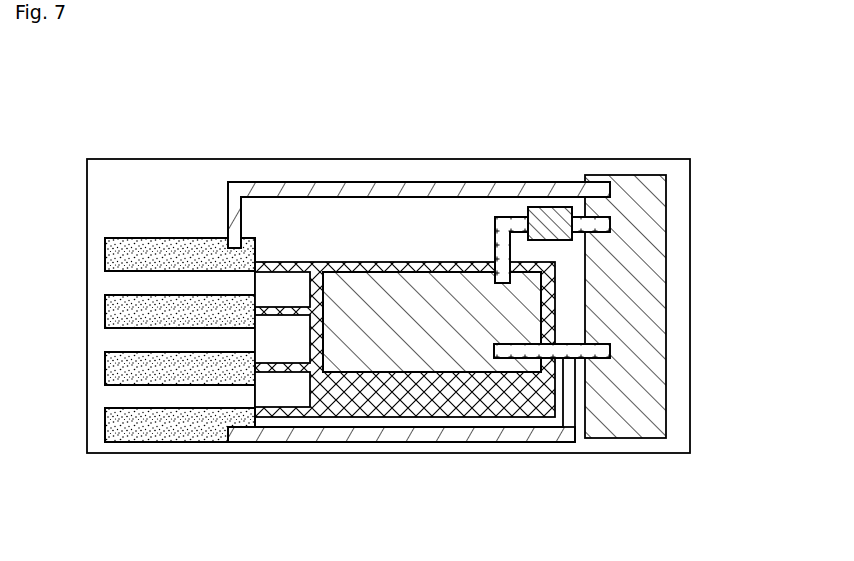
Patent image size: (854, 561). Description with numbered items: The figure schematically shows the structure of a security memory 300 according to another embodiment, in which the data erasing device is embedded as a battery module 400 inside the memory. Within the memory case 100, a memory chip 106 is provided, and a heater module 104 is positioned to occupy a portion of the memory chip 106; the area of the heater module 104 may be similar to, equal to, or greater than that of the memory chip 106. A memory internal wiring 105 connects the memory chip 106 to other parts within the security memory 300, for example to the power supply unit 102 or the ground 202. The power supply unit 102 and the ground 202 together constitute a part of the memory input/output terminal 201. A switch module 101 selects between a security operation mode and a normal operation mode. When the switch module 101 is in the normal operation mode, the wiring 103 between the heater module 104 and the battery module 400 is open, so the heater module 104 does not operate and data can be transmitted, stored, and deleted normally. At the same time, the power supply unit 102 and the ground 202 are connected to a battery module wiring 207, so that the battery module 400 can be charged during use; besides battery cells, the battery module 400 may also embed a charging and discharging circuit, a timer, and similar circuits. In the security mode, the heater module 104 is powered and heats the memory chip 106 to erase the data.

The security memory 300 is at (83, 113).
The memory case 100 is at (163, 173).
The battery module 400 is at (660, 306).
The memory input/output terminal 201 is at (138, 347).
The ground 202 is at (116, 245).
The power supply unit 102 is at (180, 463).
The memory chip 106 is at (525, 398).
The memory internal wiring 105 is at (298, 413).
The heater module 104 is at (406, 351).
The battery module wiring 207 is at (423, 190).
The wiring 103 is at (610, 220).
The switch module 101 is at (548, 222).